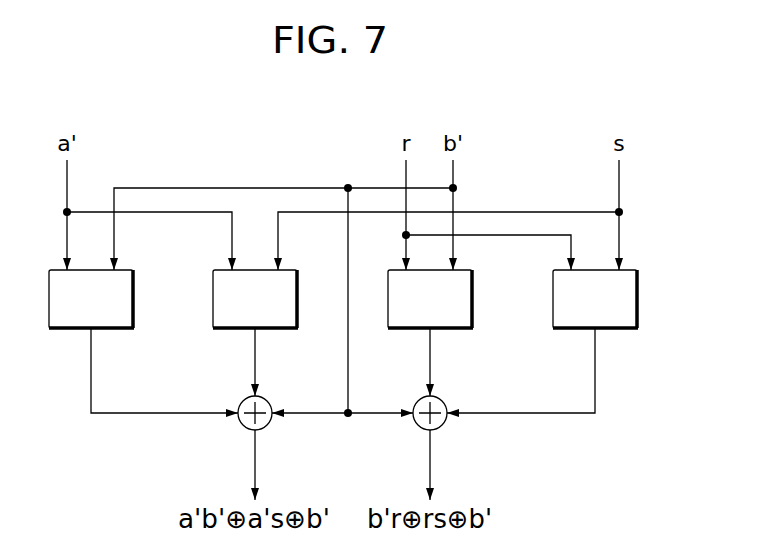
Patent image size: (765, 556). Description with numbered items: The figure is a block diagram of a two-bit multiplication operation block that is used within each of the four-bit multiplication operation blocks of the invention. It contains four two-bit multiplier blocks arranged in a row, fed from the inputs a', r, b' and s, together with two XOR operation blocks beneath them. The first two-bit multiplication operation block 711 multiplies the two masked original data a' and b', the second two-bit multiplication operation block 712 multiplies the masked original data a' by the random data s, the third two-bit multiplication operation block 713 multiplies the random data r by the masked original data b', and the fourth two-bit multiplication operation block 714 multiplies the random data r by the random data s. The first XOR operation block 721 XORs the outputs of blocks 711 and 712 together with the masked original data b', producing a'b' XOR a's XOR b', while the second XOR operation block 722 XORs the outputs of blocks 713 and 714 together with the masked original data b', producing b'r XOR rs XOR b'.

The first 2-bit multiplication operation block 711 is at (117, 331).
The second 2-bit multiplication operation block 712 is at (280, 331).
The third 2-bit multiplication operation block 713 is at (455, 331).
The fourth 2-bit multiplication operation block 714 is at (620, 331).
The first XOR operation block 721 is at (268, 426).
The second XOR operation block 722 is at (443, 426).